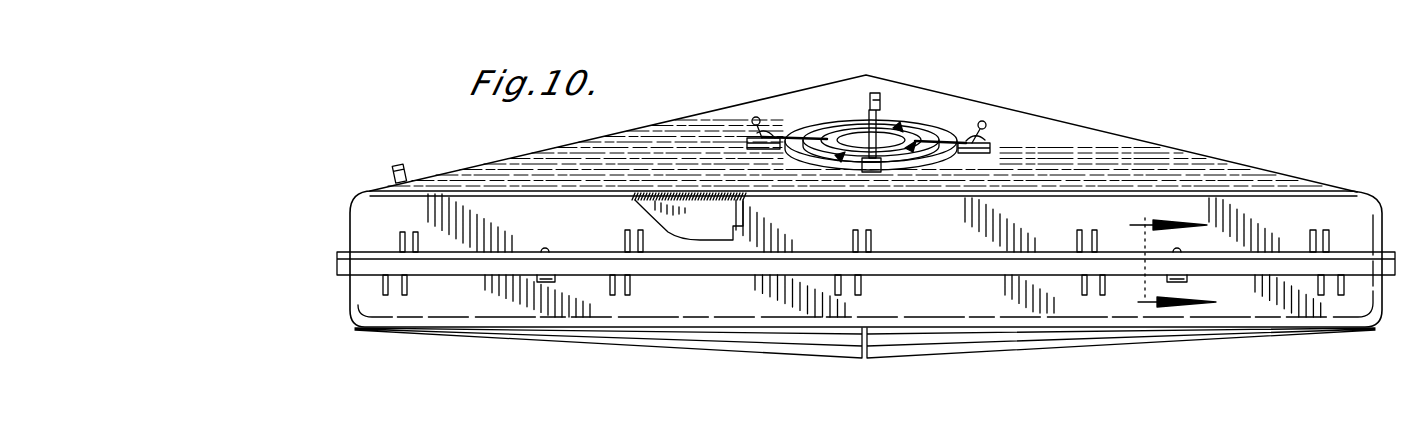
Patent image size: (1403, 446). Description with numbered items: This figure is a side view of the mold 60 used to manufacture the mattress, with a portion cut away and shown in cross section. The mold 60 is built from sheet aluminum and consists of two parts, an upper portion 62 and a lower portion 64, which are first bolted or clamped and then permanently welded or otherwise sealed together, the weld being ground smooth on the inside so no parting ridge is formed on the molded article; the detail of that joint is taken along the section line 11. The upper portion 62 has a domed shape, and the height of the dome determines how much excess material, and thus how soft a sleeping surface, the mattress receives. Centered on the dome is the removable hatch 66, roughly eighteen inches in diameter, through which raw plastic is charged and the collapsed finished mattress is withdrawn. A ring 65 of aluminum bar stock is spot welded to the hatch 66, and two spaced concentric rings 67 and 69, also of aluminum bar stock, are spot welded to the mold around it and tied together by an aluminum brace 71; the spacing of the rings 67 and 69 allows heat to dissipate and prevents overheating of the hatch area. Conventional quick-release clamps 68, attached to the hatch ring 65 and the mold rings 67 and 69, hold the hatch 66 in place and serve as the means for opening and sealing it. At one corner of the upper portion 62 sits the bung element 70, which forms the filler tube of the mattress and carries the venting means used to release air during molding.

The mold 60 is at (340, 225).
The upper portion of the mold 62 is at (667, 137).
The lower portion of the mold 64 is at (590, 318).
The hatch ring 65 is at (920, 142).
The hatch 66 is at (890, 140).
The concentric ring 67 is at (858, 172).
The quick-release clamps 68 is at (758, 118).
The concentric ring 69 is at (800, 160).
The bung element 70 is at (404, 156).
The brace 71 is at (840, 120).
The section line 11 is at (1160, 258).